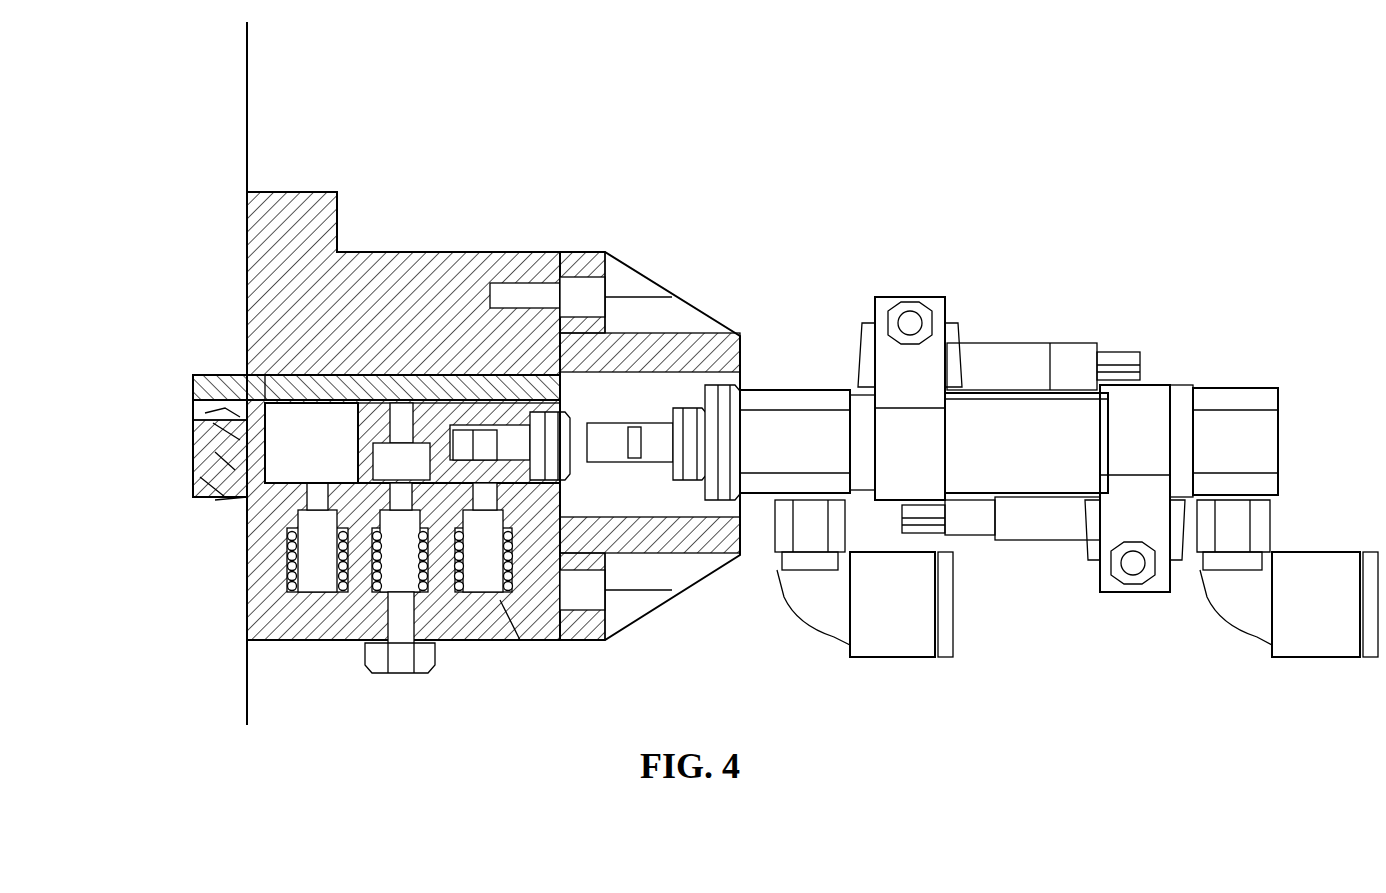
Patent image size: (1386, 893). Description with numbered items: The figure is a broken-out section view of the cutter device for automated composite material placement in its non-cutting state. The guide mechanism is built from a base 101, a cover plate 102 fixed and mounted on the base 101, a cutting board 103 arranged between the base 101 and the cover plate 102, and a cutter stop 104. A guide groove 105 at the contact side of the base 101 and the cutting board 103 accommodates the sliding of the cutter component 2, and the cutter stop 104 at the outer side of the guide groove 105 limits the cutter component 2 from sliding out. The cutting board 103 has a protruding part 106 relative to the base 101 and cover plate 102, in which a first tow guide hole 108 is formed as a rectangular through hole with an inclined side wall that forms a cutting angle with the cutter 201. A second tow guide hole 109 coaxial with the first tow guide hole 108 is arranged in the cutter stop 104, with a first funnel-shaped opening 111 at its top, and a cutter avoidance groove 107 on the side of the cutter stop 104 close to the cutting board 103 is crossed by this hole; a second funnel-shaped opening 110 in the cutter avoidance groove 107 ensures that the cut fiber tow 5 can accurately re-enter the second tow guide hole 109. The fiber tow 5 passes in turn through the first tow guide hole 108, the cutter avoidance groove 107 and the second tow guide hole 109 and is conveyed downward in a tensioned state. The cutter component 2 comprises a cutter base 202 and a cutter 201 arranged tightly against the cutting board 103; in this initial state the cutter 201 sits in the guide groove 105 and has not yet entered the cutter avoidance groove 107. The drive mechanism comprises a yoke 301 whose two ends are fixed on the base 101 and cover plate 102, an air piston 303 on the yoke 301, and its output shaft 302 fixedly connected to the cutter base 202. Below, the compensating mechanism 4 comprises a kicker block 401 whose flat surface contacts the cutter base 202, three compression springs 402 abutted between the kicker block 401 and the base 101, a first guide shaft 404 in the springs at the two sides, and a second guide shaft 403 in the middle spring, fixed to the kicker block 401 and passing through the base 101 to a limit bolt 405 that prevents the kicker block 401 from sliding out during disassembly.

The fiber tow 5 is at (215, 373).
The cutter component 2 is at (373, 287).
The cutter 201 is at (364, 288).
The cutter base 202 is at (396, 306).
The base 101 is at (360, 520).
The cover plate 102 is at (360, 283).
The cutting board 103 is at (373, 340).
The cutter stop 104 is at (167, 480).
The guide groove 105 is at (250, 479).
The protruding part 106 is at (168, 431).
The cutter avoidance groove 107 is at (186, 433).
The first tow guide hole 108 is at (217, 365).
The second tow guide hole 109 is at (191, 509).
The second funnel-shaped opening 110 is at (183, 408).
The first funnel-shaped opening 111 is at (184, 456).
The yoke 301 is at (650, 426).
The output shaft 302 is at (663, 452).
The air piston 303 is at (939, 367).
The compensating mechanism 4 is at (550, 745).
The kicker block 401 is at (336, 637).
The compression spring 402 is at (381, 608).
The second guide shaft 403 is at (466, 633).
The first guide shaft 404 is at (530, 653).
The limit bolt 405 is at (410, 669).